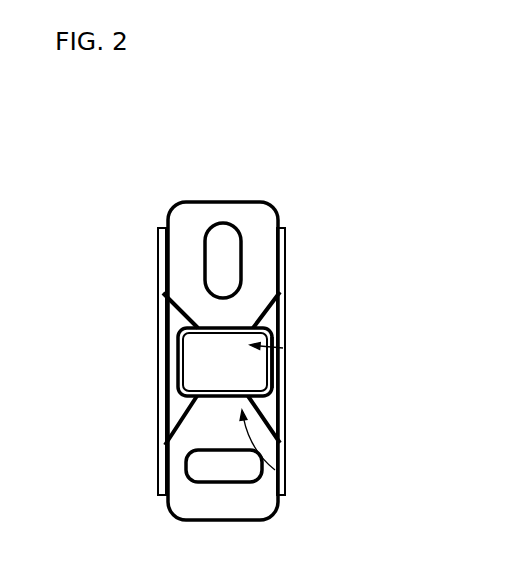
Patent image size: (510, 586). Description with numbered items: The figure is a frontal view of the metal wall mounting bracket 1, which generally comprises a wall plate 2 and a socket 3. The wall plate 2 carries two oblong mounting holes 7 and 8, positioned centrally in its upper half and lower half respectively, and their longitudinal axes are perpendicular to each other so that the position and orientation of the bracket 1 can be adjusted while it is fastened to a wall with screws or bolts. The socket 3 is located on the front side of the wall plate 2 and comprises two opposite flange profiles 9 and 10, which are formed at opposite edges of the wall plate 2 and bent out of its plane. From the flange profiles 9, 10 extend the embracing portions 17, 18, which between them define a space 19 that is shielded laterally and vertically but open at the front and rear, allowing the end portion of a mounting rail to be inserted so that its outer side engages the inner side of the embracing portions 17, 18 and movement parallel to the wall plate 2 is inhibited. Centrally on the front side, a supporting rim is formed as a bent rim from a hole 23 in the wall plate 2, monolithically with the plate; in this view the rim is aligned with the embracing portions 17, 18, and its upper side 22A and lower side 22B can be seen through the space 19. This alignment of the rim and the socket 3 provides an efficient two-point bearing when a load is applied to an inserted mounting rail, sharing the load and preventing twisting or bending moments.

The metal wall mounting bracket 1 is at (307, 142).
The wall plate 2 is at (248, 232).
The socket 3 is at (275, 470).
The mounting hole 7 is at (222, 250).
The mounting hole 8 is at (228, 467).
The flange profile 9 is at (278, 375).
The flange profile 10 is at (178, 380).
The embracing portion 17 is at (283, 348).
The embracing portion 18 is at (178, 358).
The space 19 is at (273, 337).
The upper side of supporting rim 22A is at (212, 325).
The lower side of supporting rim 22B is at (218, 398).
The hole 23 is at (209, 376).